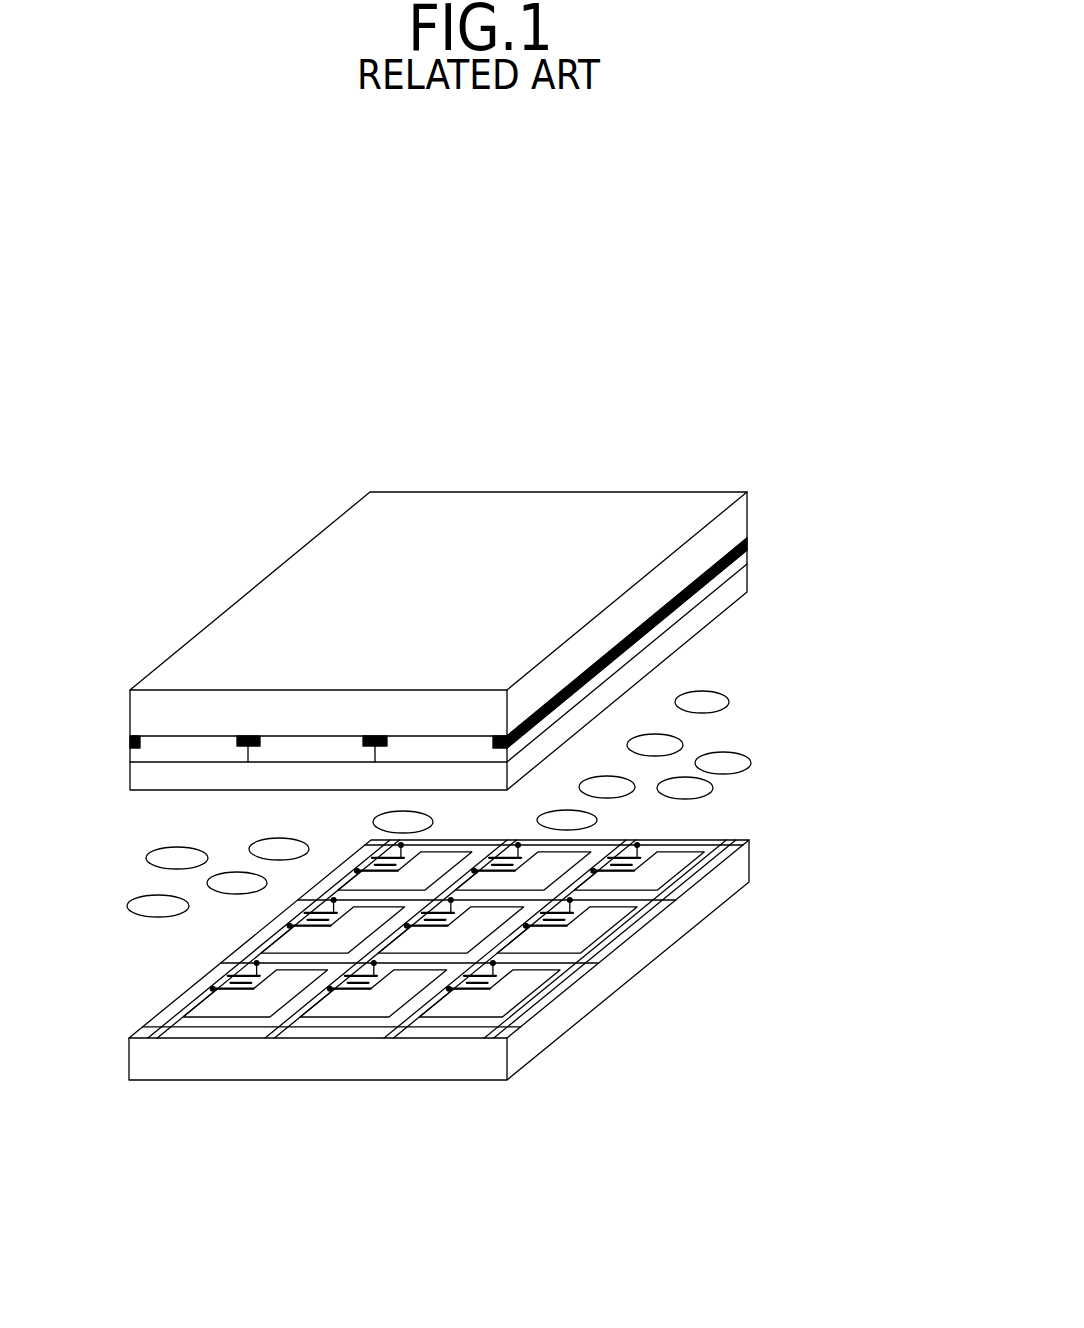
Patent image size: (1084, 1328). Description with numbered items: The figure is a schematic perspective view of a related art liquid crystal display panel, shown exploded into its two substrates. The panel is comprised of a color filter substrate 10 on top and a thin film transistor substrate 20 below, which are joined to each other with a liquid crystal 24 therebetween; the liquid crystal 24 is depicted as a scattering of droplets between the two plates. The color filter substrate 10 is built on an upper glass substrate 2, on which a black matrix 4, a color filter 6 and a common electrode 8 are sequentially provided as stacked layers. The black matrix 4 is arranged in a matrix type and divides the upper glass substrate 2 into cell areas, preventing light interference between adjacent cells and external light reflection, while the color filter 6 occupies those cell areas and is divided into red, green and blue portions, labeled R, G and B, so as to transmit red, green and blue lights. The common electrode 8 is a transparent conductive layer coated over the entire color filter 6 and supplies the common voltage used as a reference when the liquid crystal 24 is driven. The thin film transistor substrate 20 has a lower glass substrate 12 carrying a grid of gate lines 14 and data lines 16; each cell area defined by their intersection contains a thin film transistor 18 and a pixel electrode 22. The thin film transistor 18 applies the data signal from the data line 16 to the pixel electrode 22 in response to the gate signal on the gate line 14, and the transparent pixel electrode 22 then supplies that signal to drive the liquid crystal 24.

The upper glass substrate 2 is at (747, 515).
The black matrix 4 is at (130, 738).
The color filter 6 is at (747, 550).
The common electrode 8 is at (747, 580).
The color filter substrate 10 is at (868, 486).
The lower glass substrate 12 is at (733, 878).
The gate line 14 is at (648, 900).
The data line 16 is at (388, 1013).
The thin film transistor 18 is at (484, 993).
The thin film transistor substrate 20 is at (875, 858).
The pixel electrode 22 is at (517, 992).
The liquid crystal 24 is at (728, 702).